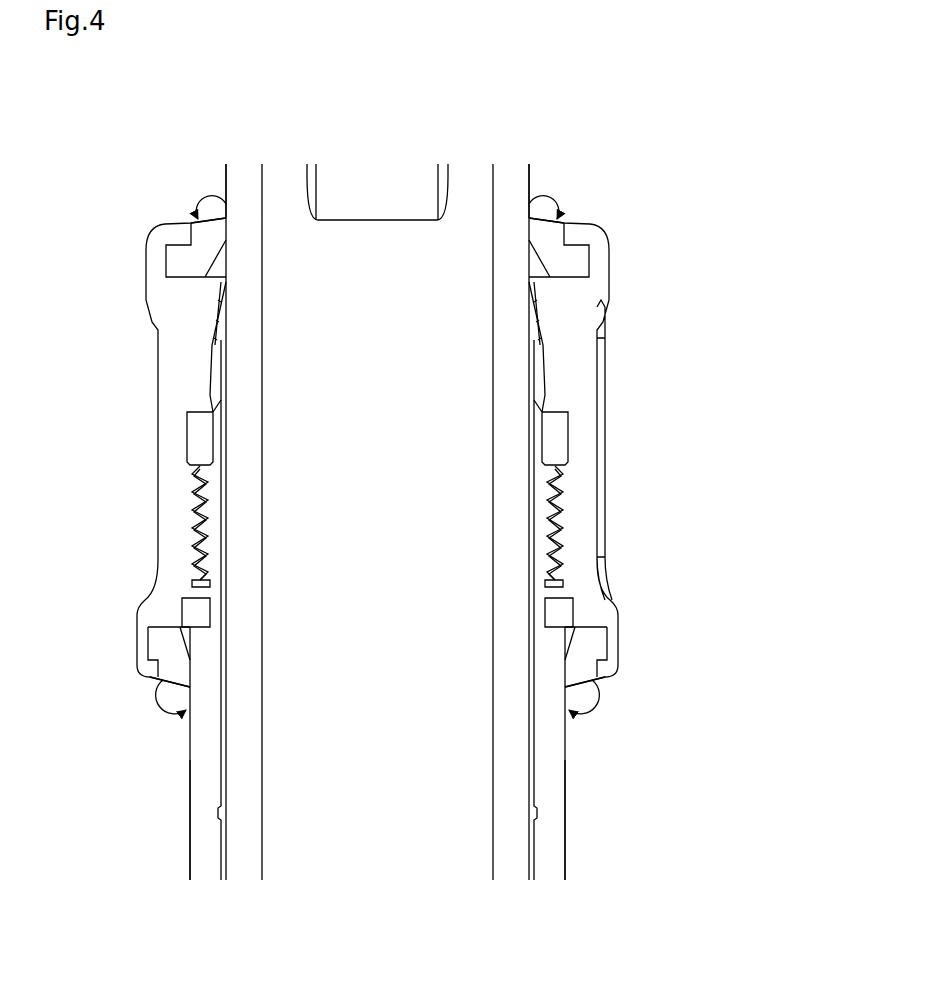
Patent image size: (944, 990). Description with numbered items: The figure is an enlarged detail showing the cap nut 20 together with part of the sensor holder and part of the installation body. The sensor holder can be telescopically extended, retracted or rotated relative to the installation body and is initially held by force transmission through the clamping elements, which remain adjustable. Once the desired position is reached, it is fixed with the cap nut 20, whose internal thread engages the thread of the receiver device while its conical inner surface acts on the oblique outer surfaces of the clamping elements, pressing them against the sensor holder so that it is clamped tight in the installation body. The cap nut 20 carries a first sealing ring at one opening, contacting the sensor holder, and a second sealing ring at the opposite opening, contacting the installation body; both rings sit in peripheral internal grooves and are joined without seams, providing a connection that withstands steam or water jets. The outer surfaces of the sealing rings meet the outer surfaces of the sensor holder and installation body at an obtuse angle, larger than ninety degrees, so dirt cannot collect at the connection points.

The cap nut 20 is at (592, 286).